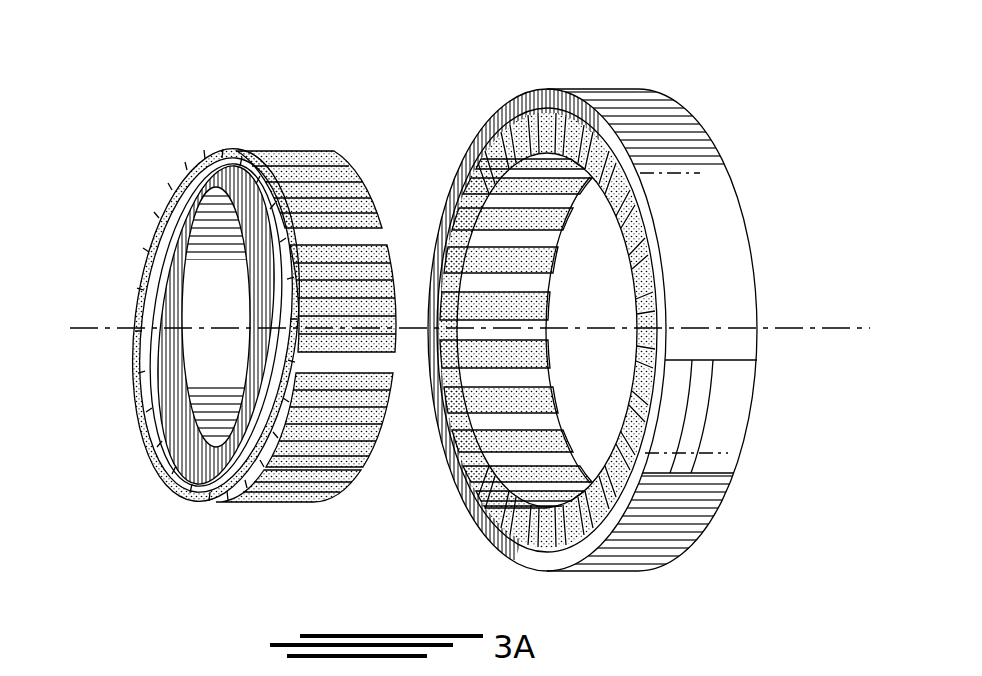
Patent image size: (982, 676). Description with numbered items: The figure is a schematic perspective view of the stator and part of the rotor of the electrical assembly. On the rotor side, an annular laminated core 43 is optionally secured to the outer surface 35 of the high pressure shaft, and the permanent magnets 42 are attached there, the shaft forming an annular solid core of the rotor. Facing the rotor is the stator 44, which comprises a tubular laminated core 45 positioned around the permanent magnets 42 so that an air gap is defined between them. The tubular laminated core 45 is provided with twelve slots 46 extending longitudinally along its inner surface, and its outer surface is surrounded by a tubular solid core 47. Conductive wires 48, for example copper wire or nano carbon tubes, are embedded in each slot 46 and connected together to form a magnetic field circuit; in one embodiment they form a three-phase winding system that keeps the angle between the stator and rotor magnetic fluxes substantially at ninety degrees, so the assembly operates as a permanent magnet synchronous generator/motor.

The outer surface 35 is at (178, 223).
The permanent magnets 42 is at (300, 402).
The annular laminated core 43 is at (187, 463).
The stator 44 is at (620, 518).
The tubular laminated core 45 is at (723, 415).
The slots 46 is at (523, 125).
The tubular solid core 47 is at (713, 197).
The conductive wires 48 is at (512, 140).